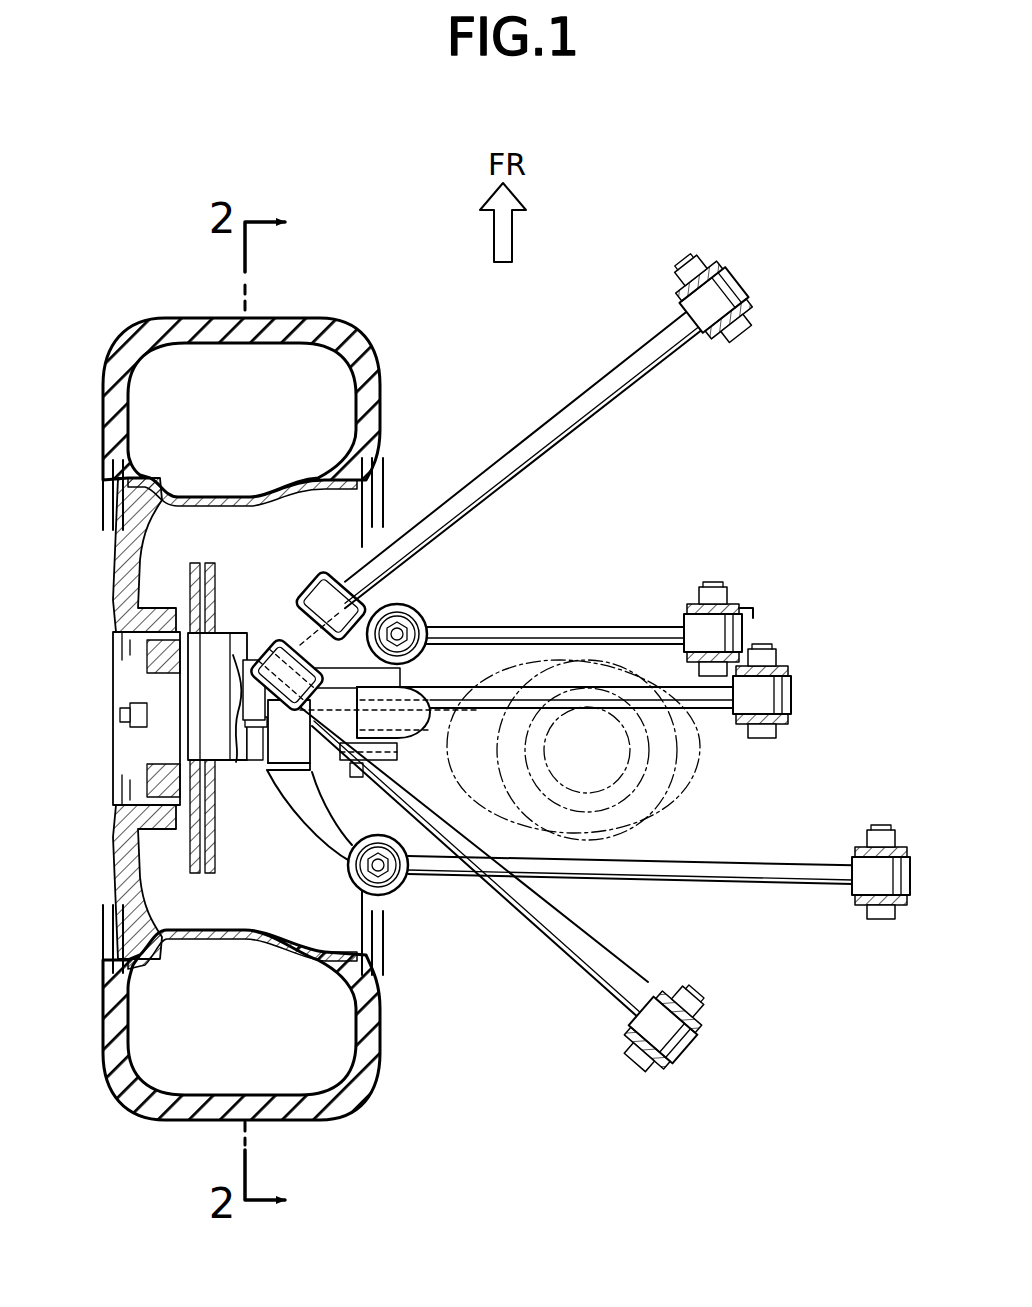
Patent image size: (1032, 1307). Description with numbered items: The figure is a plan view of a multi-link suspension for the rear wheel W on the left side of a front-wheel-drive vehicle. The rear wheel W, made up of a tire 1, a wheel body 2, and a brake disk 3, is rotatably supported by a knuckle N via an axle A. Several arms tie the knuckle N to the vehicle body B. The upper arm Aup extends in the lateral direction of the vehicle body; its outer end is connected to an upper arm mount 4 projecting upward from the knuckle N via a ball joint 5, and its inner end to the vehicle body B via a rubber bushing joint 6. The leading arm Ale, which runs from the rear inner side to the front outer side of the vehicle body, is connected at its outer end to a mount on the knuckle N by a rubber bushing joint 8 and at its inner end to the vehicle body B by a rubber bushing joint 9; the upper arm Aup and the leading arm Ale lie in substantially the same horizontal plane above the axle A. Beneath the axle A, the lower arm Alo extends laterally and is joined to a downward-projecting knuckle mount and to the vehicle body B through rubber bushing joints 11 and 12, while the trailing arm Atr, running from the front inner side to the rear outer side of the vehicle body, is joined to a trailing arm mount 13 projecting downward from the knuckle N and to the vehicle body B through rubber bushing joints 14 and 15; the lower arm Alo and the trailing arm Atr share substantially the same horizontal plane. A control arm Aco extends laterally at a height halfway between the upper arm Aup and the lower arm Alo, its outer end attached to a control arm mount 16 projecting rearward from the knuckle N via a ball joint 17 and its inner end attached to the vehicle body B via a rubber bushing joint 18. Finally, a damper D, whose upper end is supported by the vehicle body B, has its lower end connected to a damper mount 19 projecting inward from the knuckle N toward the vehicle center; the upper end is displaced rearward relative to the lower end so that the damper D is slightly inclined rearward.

The tire 1 is at (192, 324).
The wheel body 2 is at (133, 543).
The brake disk 3 is at (193, 862).
The upper arm mount 4 is at (341, 598).
The ball joint 5 is at (422, 608).
The rubber bushing joint 6 is at (750, 634).
The rubber bushing joint 8 is at (280, 633).
The rubber bushing joint 9 is at (690, 1064).
The rubber bushing joint 11 is at (240, 668).
The rubber bushing joint 12 is at (798, 700).
The trailing arm mount 13 is at (293, 640).
The rubber bushing joint 14 is at (327, 572).
The rubber bushing joint 15 is at (744, 272).
The control arm mount 16 is at (330, 830).
The ball joint 17 is at (400, 892).
The rubber bushing joint 18 is at (850, 860).
The damper mount 19 is at (400, 752).
The axle A is at (227, 752).
The vehicle body B is at (761, 678).
The damper D is at (650, 800).
The knuckle N is at (336, 706).
The rear wheel W is at (255, 683).
The trailing arm Atr is at (533, 442).
The upper arm Aup is at (590, 632).
The lower arm Alo is at (687, 705).
The control arm Aco is at (712, 880).
The leading arm Ale is at (573, 950).